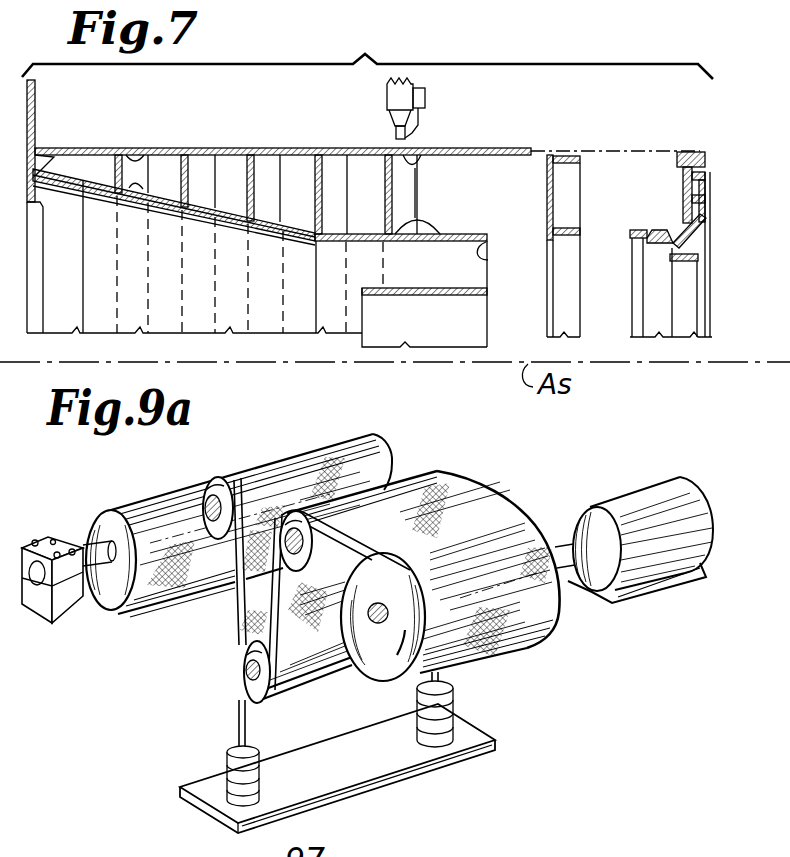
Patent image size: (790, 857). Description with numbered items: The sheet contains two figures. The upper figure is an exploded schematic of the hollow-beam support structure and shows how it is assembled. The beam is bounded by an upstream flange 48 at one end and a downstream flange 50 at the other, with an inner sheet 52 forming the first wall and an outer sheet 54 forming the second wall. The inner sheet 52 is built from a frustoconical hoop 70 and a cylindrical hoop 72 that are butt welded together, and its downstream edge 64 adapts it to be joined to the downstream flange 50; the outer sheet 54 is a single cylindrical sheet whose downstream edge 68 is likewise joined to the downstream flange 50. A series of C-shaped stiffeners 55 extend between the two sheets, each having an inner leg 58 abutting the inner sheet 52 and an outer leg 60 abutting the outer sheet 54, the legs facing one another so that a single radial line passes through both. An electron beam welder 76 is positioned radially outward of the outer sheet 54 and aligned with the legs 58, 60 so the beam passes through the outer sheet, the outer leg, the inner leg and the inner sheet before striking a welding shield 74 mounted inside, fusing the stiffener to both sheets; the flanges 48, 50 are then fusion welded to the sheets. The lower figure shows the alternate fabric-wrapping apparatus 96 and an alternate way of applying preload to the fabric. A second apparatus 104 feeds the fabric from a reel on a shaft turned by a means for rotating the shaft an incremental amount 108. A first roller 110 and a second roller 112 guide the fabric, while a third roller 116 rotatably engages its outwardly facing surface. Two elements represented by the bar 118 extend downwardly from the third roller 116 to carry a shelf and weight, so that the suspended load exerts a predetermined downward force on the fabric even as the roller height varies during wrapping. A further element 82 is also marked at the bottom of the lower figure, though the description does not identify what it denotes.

In FIG. 7, the upstream flange 48 is at (36, 116).
In FIG. 7, the downstream flange 50 is at (691, 152).
In FIG. 7, the inner sheet 52 is at (467, 225).
In FIG. 7, the outer sheet 54 is at (444, 164).
In FIG. 7, the C-shaped stiffener 55 is at (186, 172).
In FIG. 7, the inner leg 58 is at (122, 196).
In FIG. 7, the outer leg 60 is at (140, 158).
In FIG. 7, the downstream edge 64 is at (481, 237).
In FIG. 7, the downstream edge 68 is at (530, 152).
In FIG. 7, the frustoconical hoop 70 is at (165, 203).
In FIG. 7, the cylindrical hoop 72 is at (490, 263).
In FIG. 7, the welding shield 74 is at (452, 296).
In FIG. 7, the electron beam welder 76 is at (386, 95).
In FIG. 9A, the base plate 82 is at (343, 843).
In FIG. 9A, the alternate embodiment of the machine 96 is at (150, 705).
In FIG. 9A, the second apparatus 104 is at (100, 617).
In FIG. 9A, the means for rotating the shaft an incremental amount 108 is at (70, 600).
In FIG. 9A, the first roller 110 is at (212, 480).
In FIG. 9A, the second roller 112 is at (298, 560).
In FIG. 9A, the third roller 116 is at (247, 655).
In FIG. 9A, the bar 118 is at (240, 720).